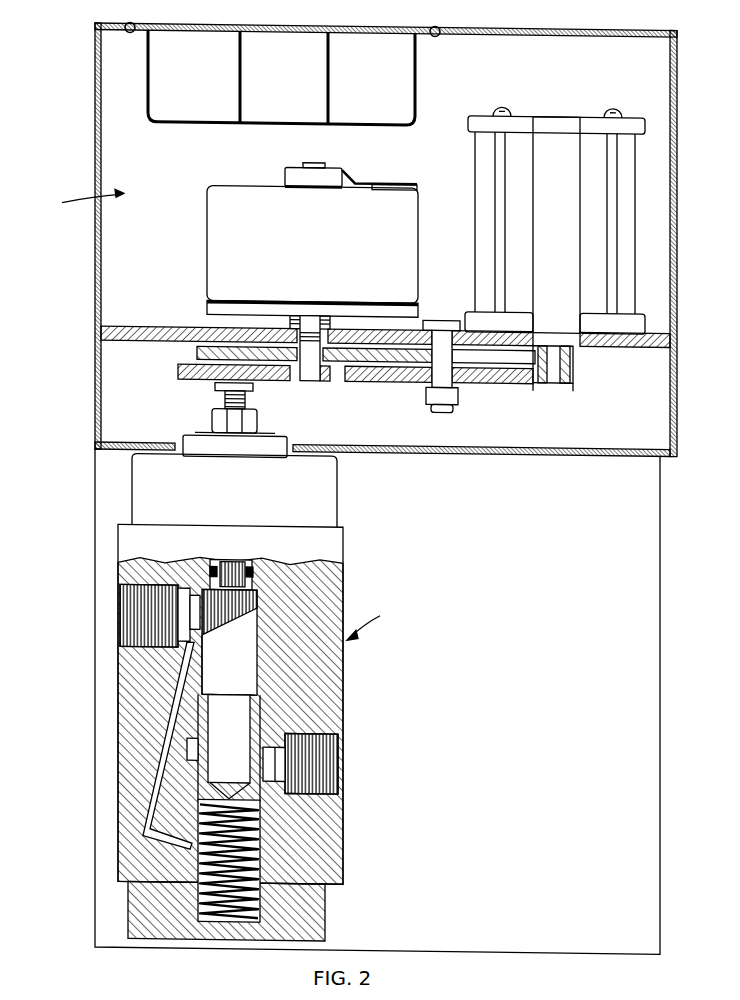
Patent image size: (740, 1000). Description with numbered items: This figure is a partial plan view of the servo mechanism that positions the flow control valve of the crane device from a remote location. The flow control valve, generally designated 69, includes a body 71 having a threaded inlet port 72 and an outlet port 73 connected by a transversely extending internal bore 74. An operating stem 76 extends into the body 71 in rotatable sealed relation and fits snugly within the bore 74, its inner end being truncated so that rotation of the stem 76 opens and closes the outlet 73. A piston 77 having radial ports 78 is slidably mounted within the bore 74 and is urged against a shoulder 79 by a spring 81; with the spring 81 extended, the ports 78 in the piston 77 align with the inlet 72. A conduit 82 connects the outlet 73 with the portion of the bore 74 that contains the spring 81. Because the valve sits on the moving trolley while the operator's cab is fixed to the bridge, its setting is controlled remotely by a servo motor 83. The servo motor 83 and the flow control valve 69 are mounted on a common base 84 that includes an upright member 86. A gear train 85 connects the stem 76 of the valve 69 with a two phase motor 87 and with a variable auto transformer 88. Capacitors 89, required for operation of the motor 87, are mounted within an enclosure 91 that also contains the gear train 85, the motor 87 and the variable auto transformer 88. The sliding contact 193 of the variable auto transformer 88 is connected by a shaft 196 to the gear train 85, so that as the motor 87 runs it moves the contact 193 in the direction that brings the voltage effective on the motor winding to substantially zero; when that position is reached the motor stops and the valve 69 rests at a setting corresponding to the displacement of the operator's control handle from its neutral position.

The enclosure 91 is at (515, 27).
The capacitors 89 is at (404, 87).
The two phase motor 87 is at (567, 125).
The variable auto transformer 88 is at (403, 229).
The sliding contact 193 is at (393, 182).
The servo motor 83 is at (79, 199).
The upright member 86 is at (133, 326).
The gear train 85 is at (398, 383).
The shaft 196 is at (312, 368).
The common base 84 is at (620, 612).
The flow control valve 69 is at (216, 732).
The body 71 is at (333, 673).
The outlet port 73 is at (125, 614).
The internal bore 74 is at (210, 654).
The operating stem 76 is at (236, 566).
The piston 77 is at (255, 706).
The radial ports 78 is at (203, 746).
The shoulder 79 is at (262, 695).
The threaded inlet port 72 is at (330, 747).
The spring 81 is at (235, 808).
The conduit 82 is at (160, 762).